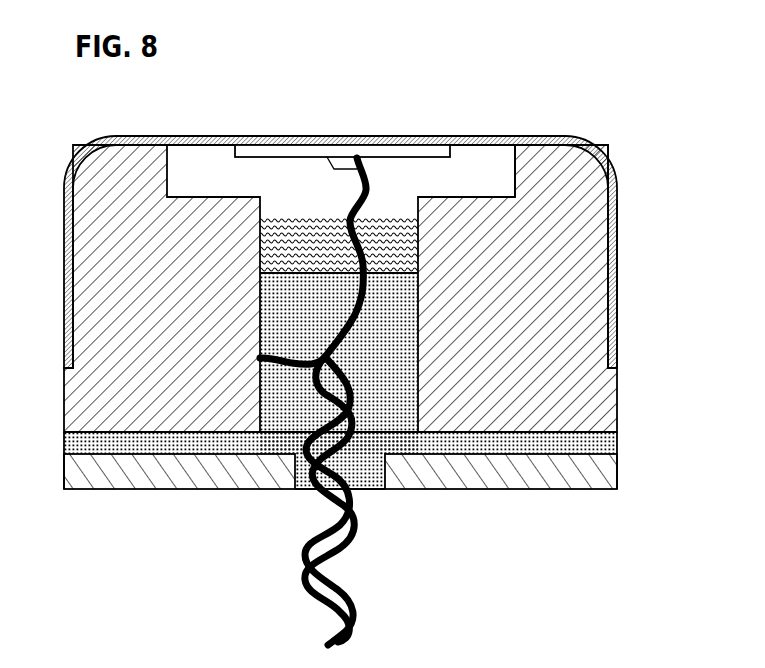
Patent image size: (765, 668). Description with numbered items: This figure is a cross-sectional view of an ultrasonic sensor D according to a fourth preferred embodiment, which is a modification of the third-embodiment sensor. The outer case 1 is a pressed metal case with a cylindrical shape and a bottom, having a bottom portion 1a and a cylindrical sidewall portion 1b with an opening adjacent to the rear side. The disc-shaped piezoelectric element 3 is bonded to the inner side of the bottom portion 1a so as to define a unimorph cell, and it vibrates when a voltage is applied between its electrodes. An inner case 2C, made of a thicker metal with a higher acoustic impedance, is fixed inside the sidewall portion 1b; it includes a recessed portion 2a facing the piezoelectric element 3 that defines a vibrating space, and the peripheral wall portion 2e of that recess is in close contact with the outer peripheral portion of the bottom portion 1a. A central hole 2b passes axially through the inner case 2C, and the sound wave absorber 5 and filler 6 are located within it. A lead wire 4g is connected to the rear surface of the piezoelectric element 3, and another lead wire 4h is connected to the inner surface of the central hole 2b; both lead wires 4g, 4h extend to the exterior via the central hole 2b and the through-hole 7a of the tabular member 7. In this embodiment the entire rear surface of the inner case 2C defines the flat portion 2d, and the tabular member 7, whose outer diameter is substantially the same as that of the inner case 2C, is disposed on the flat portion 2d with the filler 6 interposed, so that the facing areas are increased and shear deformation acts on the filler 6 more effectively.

The ultrasonic sensor D is at (608, 141).
The outer case 1 is at (607, 172).
The bottom portion 1a is at (210, 135).
The sidewall portion 1b is at (617, 268).
The recessed portion 2a is at (513, 170).
The central hole 2b is at (264, 295).
The inner case 2C is at (587, 327).
The flat or substantially flat portion 2d is at (478, 432).
The peripheral wall portion 2e is at (545, 160).
The piezoelectric element 3 is at (348, 144).
The lead wire 4g is at (312, 572).
The lead wire 4h is at (355, 575).
The sound wave absorber 5 is at (287, 216).
The filler 6 is at (397, 438).
The tabular member 7 is at (160, 489).
The through-hole 7a is at (296, 490).